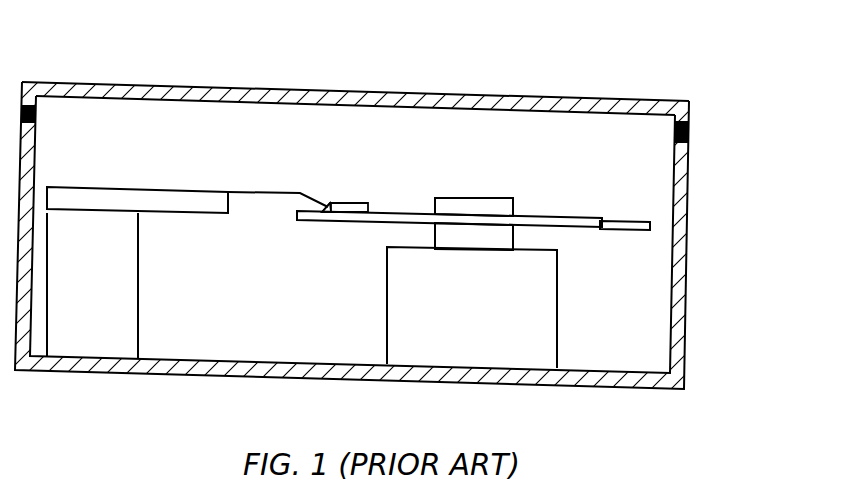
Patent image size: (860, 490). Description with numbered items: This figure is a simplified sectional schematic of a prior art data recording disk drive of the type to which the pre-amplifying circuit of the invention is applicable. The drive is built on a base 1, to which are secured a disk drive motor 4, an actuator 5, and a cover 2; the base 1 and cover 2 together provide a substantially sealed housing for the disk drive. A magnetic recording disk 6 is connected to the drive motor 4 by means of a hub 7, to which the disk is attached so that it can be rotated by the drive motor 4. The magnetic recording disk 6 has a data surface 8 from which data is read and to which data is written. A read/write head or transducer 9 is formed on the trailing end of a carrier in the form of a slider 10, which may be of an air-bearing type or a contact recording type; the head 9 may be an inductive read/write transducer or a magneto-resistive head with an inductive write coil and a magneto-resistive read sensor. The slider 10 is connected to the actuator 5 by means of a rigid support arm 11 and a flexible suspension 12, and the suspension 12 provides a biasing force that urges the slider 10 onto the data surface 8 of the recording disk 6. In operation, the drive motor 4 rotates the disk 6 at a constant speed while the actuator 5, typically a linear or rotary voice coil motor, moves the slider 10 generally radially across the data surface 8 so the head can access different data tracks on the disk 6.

The base 1 is at (678, 323).
The cover 2 is at (33, 82).
The disk drive motor 4 is at (469, 357).
The actuator 5 is at (82, 345).
The magnetic recording disk 6 is at (653, 222).
The hub 7 is at (466, 198).
The data surface 8 is at (617, 220).
The read/write head 9 is at (318, 196).
The slider 10 is at (360, 203).
The rigid support arm 11 is at (127, 187).
The flexible suspension 12 is at (249, 193).